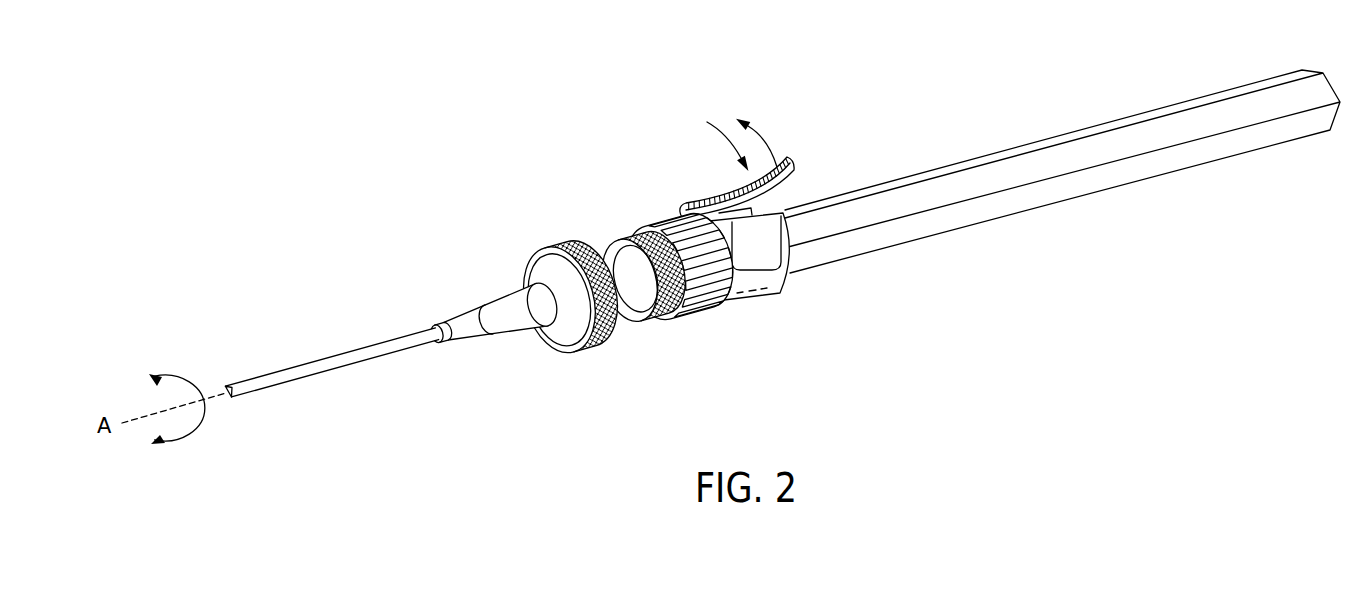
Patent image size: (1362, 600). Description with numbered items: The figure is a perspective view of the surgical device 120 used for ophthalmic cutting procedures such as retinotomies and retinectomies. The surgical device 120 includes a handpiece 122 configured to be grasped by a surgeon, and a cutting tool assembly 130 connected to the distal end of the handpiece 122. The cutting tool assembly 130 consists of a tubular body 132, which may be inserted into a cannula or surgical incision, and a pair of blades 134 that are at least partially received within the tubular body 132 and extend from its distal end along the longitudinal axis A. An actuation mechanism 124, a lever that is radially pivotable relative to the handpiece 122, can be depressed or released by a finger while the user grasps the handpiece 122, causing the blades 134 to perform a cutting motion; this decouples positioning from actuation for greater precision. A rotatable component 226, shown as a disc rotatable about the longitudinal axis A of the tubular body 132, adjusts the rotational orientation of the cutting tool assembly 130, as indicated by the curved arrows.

The surgical device 120 is at (1020, 157).
The handpiece 122 is at (1048, 206).
The actuation mechanism 124 is at (800, 178).
The rotatable component 226 is at (688, 308).
The cutting tool assembly 130 is at (349, 296).
The tubular body 132 is at (372, 364).
The pair of blades 134 is at (225, 397).